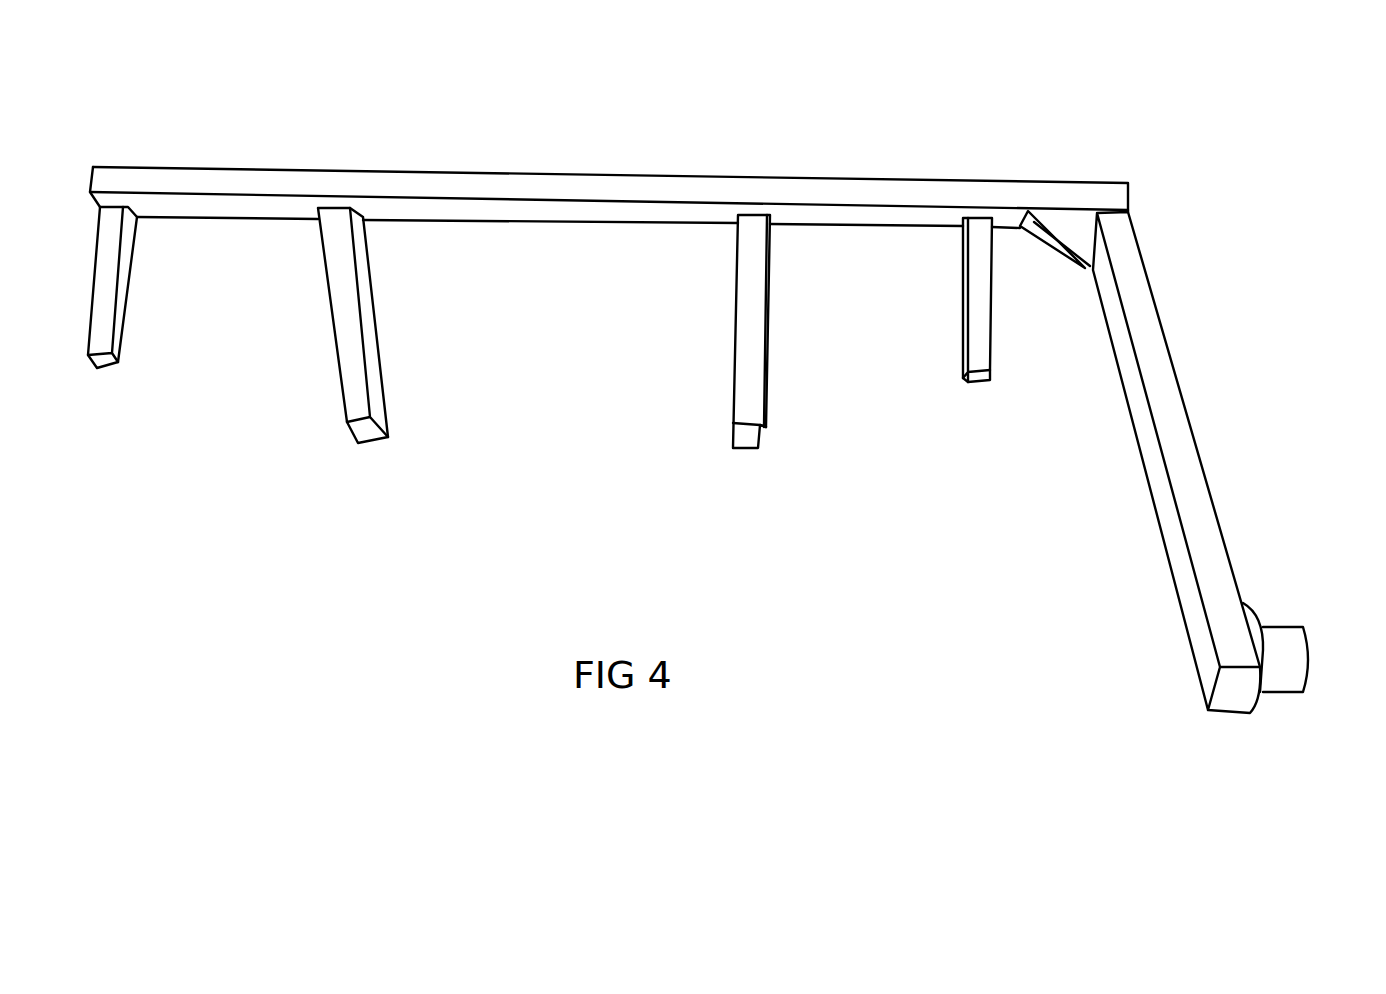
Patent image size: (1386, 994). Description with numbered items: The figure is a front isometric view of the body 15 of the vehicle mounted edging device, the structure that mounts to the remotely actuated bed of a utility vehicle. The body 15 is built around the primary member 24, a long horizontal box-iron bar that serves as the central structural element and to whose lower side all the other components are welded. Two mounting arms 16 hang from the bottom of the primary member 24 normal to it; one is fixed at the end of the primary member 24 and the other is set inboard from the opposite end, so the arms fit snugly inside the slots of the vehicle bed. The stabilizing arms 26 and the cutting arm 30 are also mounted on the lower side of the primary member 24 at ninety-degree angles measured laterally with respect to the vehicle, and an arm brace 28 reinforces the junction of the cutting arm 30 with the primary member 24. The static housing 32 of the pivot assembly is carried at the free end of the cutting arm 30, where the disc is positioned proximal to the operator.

The body 15 is at (1150, 197).
The primary member 24 is at (665, 185).
The mounting arms 16 is at (103, 307).
The stabilizing arms 26 is at (353, 367).
The arm brace 28 is at (1080, 227).
The cutting arm 30 is at (1173, 423).
The static housing 32 is at (1313, 655).